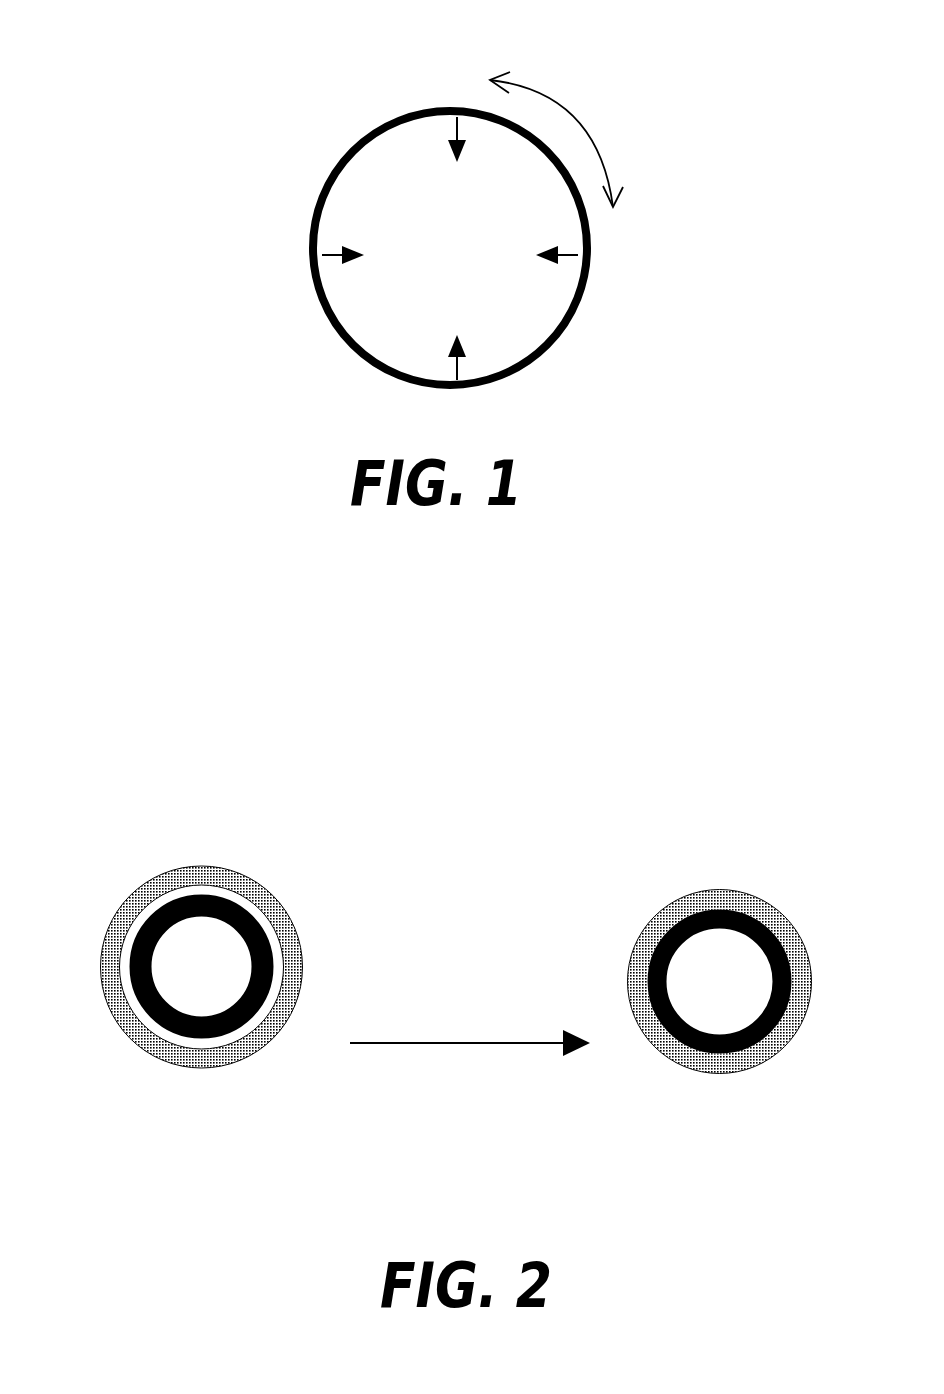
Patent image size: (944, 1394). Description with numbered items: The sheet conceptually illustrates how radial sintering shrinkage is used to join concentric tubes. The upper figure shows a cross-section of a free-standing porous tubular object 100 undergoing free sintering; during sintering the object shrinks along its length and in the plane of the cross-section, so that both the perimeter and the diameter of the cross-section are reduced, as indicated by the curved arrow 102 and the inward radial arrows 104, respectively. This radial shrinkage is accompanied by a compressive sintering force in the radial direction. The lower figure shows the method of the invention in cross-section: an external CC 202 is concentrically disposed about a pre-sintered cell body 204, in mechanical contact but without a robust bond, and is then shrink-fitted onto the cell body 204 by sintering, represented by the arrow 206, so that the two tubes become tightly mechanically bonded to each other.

In FIG. 1, the free-standing porous tubular object 100 is at (322, 116).
In FIG. 1, the arrow indicating perimeter reduction 102 is at (587, 124).
In FIG. 1, the arrows indicating diameter reduction 104 is at (576, 253).
In FIG. 2, the external CC 202 is at (262, 888).
In FIG. 2, the cell body 204 is at (218, 1033).
In FIG. 2, the arrow representing sintering 206 is at (445, 1043).